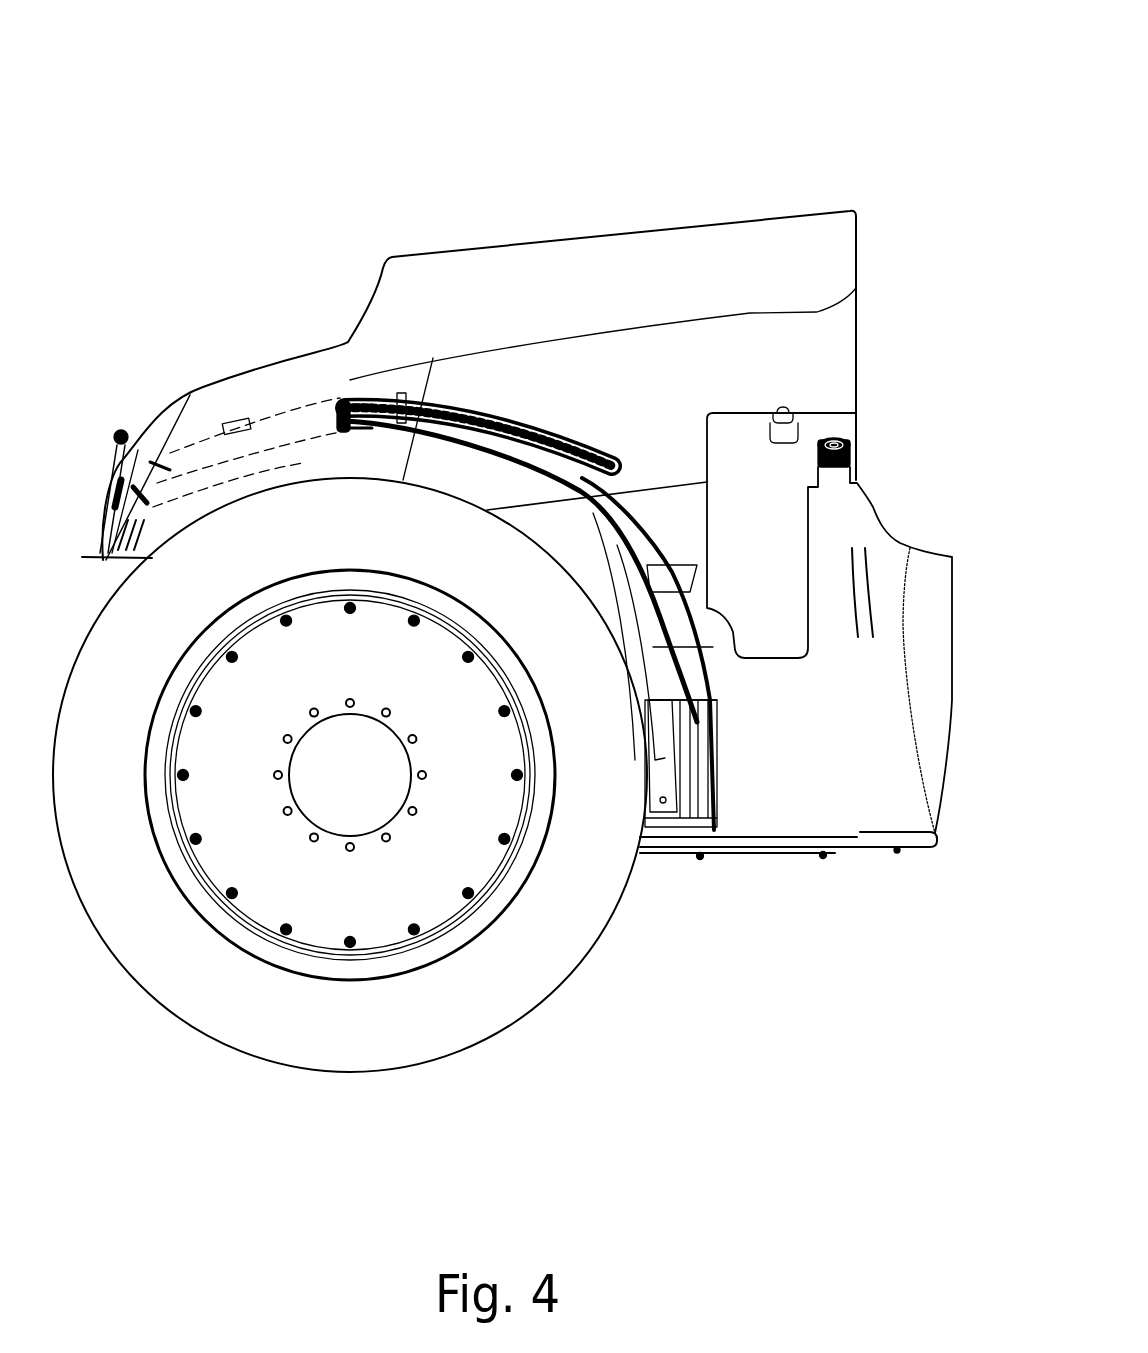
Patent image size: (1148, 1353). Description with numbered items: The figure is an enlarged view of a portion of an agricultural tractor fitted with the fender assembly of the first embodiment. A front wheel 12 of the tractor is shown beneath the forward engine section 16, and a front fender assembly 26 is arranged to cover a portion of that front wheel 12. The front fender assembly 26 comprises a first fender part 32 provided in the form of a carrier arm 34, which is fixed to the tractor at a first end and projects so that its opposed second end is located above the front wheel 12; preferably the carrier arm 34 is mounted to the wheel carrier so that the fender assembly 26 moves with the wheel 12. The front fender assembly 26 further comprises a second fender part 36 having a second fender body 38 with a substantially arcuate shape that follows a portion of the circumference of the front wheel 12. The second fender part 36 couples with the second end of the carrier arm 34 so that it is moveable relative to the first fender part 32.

The front wheel 12 is at (585, 890).
The forward engine section 16 is at (560, 280).
The front fender assembly 26 is at (805, 894).
The first fender part 32 is at (747, 389).
The carrier arm 34 is at (598, 462).
The second fender part 36 is at (420, 300).
The second fender body 38 is at (377, 403).